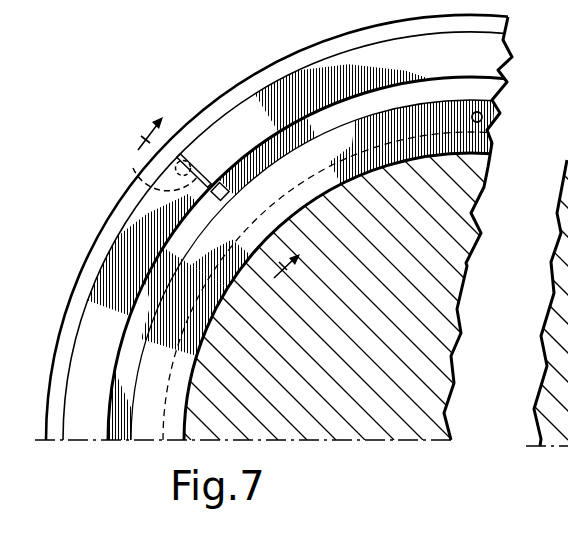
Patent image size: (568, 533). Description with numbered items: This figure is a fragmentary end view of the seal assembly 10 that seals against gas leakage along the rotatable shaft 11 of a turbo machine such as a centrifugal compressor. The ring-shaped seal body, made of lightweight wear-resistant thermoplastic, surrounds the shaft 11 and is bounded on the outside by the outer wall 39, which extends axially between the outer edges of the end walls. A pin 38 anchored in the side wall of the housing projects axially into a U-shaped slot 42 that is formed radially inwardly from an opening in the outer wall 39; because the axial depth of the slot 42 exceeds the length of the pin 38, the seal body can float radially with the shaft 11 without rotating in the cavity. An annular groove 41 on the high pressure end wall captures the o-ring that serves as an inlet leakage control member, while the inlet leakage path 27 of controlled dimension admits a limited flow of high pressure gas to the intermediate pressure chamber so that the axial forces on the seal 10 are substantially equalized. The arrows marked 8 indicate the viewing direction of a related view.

The seal assembly 10 is at (257, 62).
The rotatable shaft 11 is at (284, 295).
The inlet leakage path 27 is at (482, 116).
The pin 38 is at (187, 152).
The outer wall 39 is at (120, 223).
The annular groove 41 is at (147, 297).
The U-shaped slot 42 is at (134, 167).
The direction arrow 8 is at (210, 204).